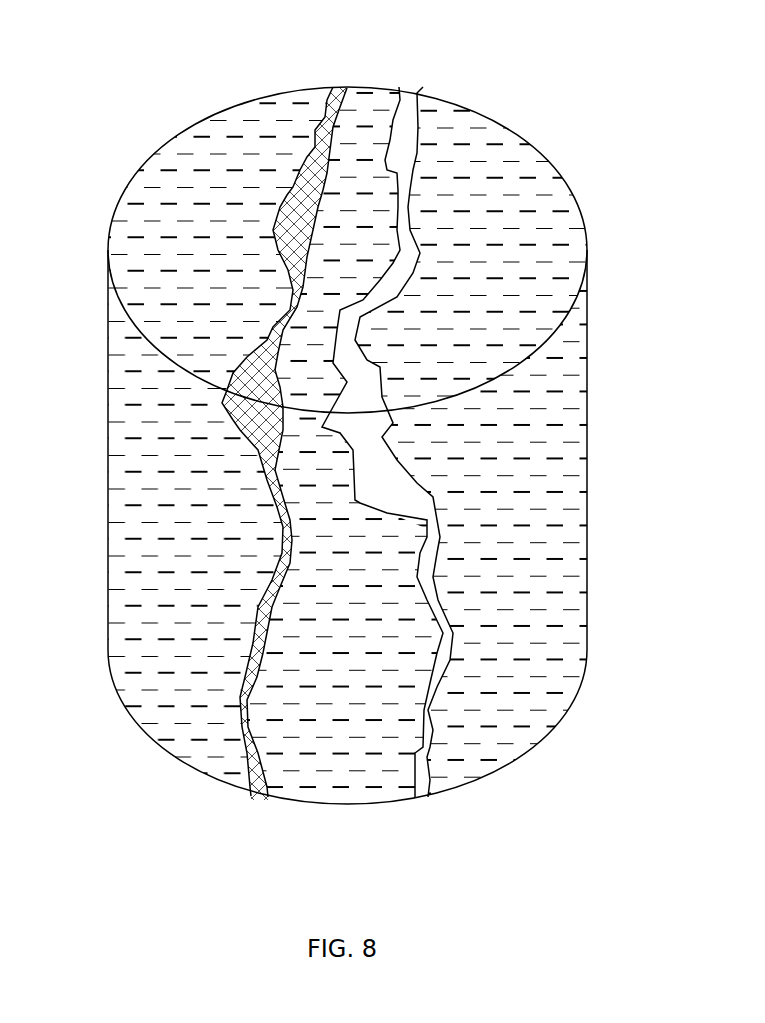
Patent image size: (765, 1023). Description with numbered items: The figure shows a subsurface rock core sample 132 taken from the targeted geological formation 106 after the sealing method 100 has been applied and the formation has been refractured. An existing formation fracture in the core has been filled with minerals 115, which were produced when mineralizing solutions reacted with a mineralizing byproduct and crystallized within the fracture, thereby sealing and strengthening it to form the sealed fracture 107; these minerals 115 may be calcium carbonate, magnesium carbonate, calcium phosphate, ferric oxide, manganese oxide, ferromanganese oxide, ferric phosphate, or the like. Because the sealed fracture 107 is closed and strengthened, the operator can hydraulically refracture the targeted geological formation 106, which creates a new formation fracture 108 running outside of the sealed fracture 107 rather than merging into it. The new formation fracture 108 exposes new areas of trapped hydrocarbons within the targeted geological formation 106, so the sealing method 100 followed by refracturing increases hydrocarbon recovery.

The sealing method 100 is at (307, 433).
The targeted geological formation 106 is at (307, 433).
The sealed fracture 107 is at (211, 428).
The new formation fracture 108 is at (417, 102).
The minerals 115 is at (285, 205).
The subsurface rock core sample 132 is at (310, 433).